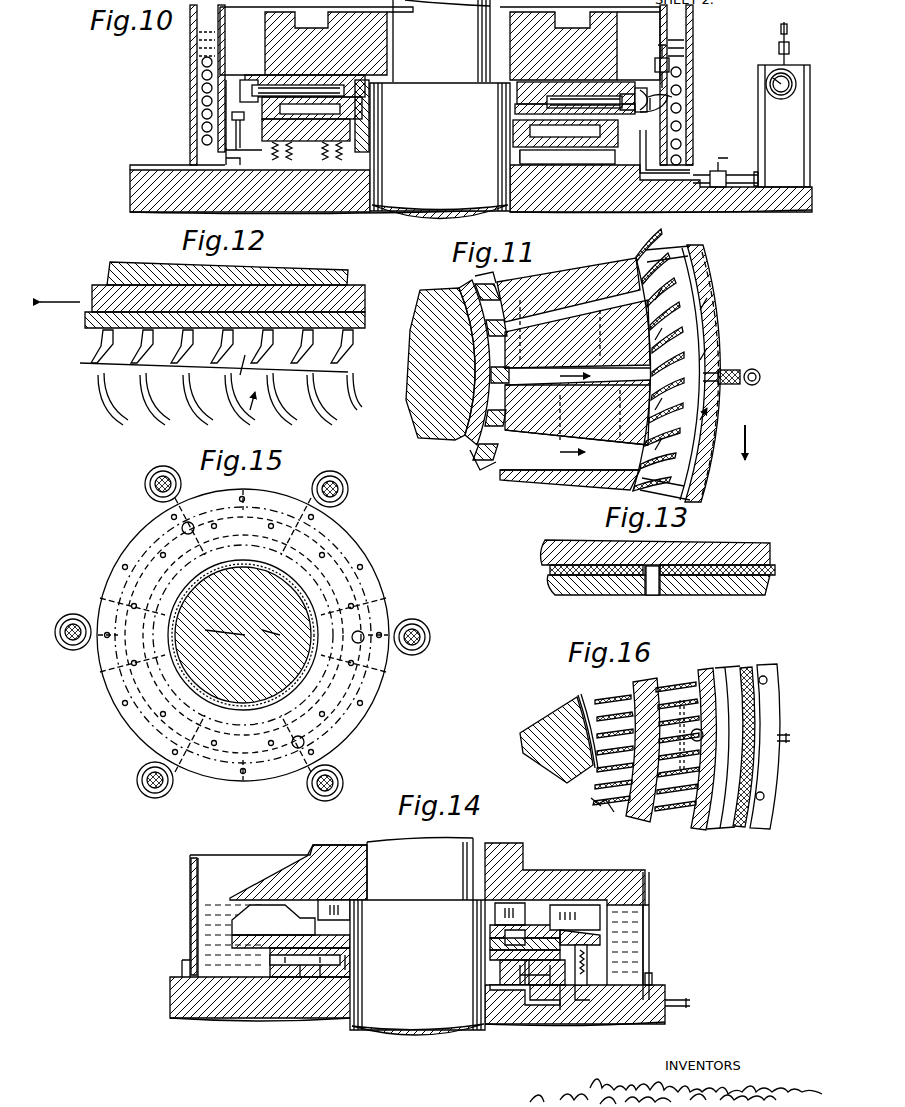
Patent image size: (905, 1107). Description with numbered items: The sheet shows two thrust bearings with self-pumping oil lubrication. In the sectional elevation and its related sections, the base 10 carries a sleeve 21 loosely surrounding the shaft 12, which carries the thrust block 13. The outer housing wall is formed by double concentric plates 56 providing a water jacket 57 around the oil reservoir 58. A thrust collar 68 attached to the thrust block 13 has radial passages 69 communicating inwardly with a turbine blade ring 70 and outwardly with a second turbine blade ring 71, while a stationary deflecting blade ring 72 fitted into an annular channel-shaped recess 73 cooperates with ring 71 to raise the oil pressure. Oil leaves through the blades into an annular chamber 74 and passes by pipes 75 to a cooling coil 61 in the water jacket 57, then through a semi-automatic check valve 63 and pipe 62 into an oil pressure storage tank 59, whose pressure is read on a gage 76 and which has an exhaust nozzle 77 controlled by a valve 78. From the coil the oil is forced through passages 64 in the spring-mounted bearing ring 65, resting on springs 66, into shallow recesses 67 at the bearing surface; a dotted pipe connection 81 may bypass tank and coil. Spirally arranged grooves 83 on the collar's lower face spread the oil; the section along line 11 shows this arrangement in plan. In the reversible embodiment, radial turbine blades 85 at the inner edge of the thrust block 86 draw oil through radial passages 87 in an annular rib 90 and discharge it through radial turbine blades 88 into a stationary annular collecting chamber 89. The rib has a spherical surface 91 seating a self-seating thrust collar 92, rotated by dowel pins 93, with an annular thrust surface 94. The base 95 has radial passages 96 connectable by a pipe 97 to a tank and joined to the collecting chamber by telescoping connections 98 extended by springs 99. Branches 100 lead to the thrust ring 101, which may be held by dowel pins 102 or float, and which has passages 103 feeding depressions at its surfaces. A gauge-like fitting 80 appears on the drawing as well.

In FIG. 10, the base 10 is at (334, 200).
In FIG. 10, the section line 11— 11 is at (495, 100).
In FIG. 10, the shaft 12 is at (402, 196).
In FIG. 11, the shaft 12 is at (410, 372).
In FIG. 15, the shaft 12 is at (292, 605).
In FIG. 16, the shaft 12 is at (548, 715).
In FIG. 14, the shaft 12 is at (384, 1022).
In FIG. 10, the thrust block 13 is at (492, 33).
In FIG. 12, the thrust block 13 is at (352, 272).
In FIG. 10, the sleeve 21 is at (366, 134).
In FIG. 11, the sleeve 21 is at (452, 276).
In FIG. 10, the concentric plates 56 is at (232, 95).
In FIG. 10, the water jacket 57 is at (200, 65).
In FIG. 10, the oil reservoir 58 is at (235, 33).
In FIG. 10, the oil pressure storage tank 59 is at (762, 80).
In FIG. 10, the cooling coil 61 is at (682, 124).
In FIG. 10, the pipe 62 is at (742, 187).
In FIG. 10, the semi-automatic check valve 63 is at (720, 165).
In FIG. 10, the passages 64 is at (560, 150).
In FIG. 13, the passages 64 is at (655, 586).
In FIG. 10, the bearing ring 65 is at (545, 85).
In FIG. 13, the bearing ring 65 is at (760, 580).
In FIG. 10, the springs 66 is at (517, 160).
In FIG. 13, the shallow recess 67 is at (615, 582).
In FIG. 10, the thrust collar 68 is at (512, 98).
In FIG. 12, the thrust collar 68 is at (366, 297).
In FIG. 11, the thrust collar 68 is at (530, 262).
In FIG. 13, the thrust collar 68 is at (772, 554).
In FIG. 10, the radial passages 69 is at (562, 100).
In FIG. 11, the radial passages 69 is at (560, 272).
In FIG. 10, the turbine blade ring 70 is at (512, 110).
In FIG. 12, the turbine blade ring 70 is at (320, 348).
In FIG. 11, the turbine blade ring 70 is at (462, 438).
In FIG. 10, the second turbine blade ring 71 is at (622, 95).
In FIG. 11, the second turbine blade ring 71 is at (661, 368).
In FIG. 10, the stationary deflecting blade ring 72 is at (642, 88).
In FIG. 11, the stationary deflecting blade ring 72 is at (712, 285).
In FIG. 10, the annular channel-shaped recess 73 is at (652, 150).
In FIG. 11, the annular channel-shaped recess 73 is at (690, 290).
In FIG. 10, the annular passage or chamber 74 is at (205, 125).
In FIG. 11, the annular passage or chamber 74 is at (712, 342).
In FIG. 10, the pipes 75 is at (690, 80).
In FIG. 11, the pipes 75 is at (762, 376).
In FIG. 10, the gage 76 is at (768, 70).
In FIG. 10, the exhaust nozzle 77 is at (786, 40).
In FIG. 10, the valve 78 is at (776, 70).
In FIG. 10, the valve 80 is at (664, 52).
In FIG. 10, the pipe connection 81 is at (690, 94).
In FIG. 11, the spirally arranged grooves 83 is at (545, 430).
In FIG. 13, the spirally arranged grooves 83 is at (590, 565).
In FIG. 16, the radial turbine blades 85 is at (618, 705).
In FIG. 14, the radial turbine blades 85 is at (513, 905).
In FIG. 16, the thrust block 86 is at (660, 693).
In FIG. 14, the thrust block 86 is at (565, 912).
In FIG. 16, the radial passages 87 is at (600, 795).
In FIG. 14, the radial passages 87 is at (578, 925).
In FIG. 16, the radial turbine blades 88 is at (682, 690).
In FIG. 14, the radial turbine blades 88 is at (623, 910).
In FIG. 14, the annular collecting chamber 89 is at (628, 930).
In FIG. 14, the annular rib 90 is at (338, 908).
In FIG. 14, the spherical surface 91 is at (347, 922).
In FIG. 14, the thrust collar 92 is at (350, 940).
In FIG. 16, the dowel pins 93 is at (582, 715).
In FIG. 14, the dowel pins 93 is at (493, 928).
In FIG. 14, the annular thrust surface 94 is at (493, 944).
In FIG. 14, the base 95 is at (530, 1012).
In FIG. 14, the radial passages 96 is at (572, 1003).
In FIG. 16, the pipe 97 is at (787, 742).
In FIG. 14, the pipe 97 is at (692, 1003).
In FIG. 15, the telescoping or flexible connections 98 is at (147, 782).
In FIG. 16, the telescoping or flexible connections 98 is at (705, 733).
In FIG. 14, the telescoping or flexible connections 98 is at (654, 978).
In FIG. 15, the springs 99 is at (137, 775).
In FIG. 16, the springs 99 is at (731, 747).
In FIG. 14, the springs 99 is at (598, 963).
In FIG. 14, the branches 100 is at (492, 995).
In FIG. 15, the thrust ring 101 is at (125, 714).
In FIG. 14, the thrust ring 101 is at (492, 983).
In FIG. 15, the dowel pins 102 is at (180, 530).
In FIG. 14, the dowel pins 102 is at (500, 1033).
In FIG. 15, the passages 103 is at (150, 680).
In FIG. 14, the passages 103 is at (492, 972).